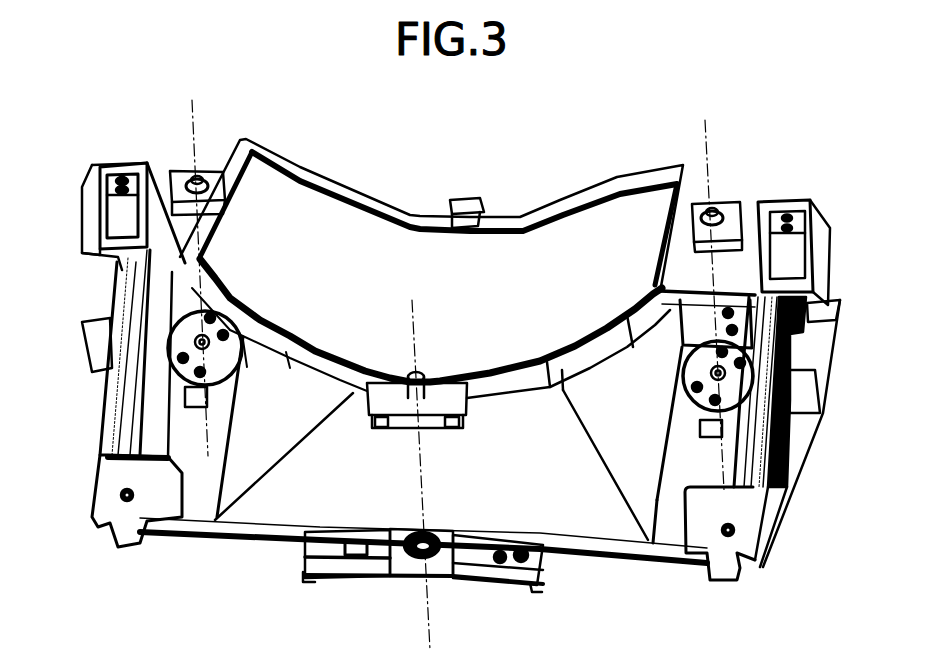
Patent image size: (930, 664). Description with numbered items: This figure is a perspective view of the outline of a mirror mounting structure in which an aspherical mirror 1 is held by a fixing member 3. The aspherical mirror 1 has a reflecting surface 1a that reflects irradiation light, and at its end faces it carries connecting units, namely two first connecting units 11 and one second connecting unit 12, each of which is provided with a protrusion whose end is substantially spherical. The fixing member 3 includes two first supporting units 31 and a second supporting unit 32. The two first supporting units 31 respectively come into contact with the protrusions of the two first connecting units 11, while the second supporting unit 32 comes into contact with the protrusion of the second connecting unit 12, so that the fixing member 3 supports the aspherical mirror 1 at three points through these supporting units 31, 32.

The aspherical mirror 1 is at (640, 180).
The reflecting surface 1a is at (370, 227).
The first connecting unit 11 is at (220, 170).
The second connecting unit 12 is at (377, 425).
The fixing member 3 is at (283, 510).
The first supporting unit 31 is at (203, 338).
The second supporting unit 32 is at (440, 580).